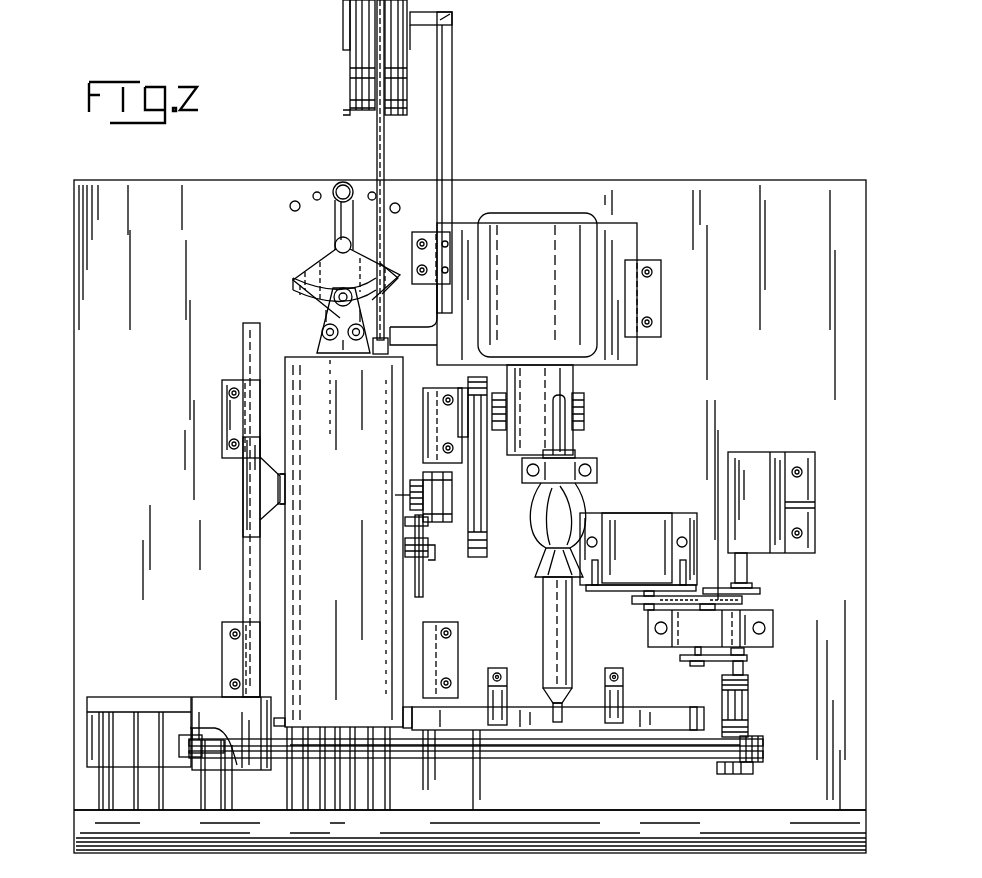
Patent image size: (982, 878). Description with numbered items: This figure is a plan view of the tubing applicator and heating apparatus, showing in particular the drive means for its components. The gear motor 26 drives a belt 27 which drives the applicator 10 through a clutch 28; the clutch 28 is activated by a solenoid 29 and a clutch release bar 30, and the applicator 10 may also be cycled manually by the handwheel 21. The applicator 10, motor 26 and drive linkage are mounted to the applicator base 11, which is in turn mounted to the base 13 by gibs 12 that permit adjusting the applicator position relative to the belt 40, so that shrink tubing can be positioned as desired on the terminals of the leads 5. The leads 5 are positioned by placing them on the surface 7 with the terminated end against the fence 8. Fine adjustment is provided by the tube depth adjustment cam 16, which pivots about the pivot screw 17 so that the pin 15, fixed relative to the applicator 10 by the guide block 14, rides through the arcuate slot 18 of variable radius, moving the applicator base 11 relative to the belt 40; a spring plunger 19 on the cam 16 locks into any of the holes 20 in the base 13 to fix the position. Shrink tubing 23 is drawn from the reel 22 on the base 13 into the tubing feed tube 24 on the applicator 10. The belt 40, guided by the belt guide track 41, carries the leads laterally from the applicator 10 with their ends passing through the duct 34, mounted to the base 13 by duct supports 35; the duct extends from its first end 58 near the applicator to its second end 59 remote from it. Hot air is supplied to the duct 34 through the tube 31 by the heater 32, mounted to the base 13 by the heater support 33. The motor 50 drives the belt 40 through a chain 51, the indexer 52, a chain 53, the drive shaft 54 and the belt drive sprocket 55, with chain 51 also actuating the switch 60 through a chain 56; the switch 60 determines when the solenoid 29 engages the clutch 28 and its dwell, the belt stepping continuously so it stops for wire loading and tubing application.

The leads 5 is at (202, 812).
The surface 7 is at (173, 715).
The fence 8 is at (100, 697).
The applicator 10 is at (270, 338).
The applicator base 11 is at (243, 357).
The gibs 12 is at (222, 420).
The base 13 is at (207, 188).
The guide block 14 is at (322, 330).
The pin 15 is at (325, 300).
The tube depth adjustment cam 16 is at (323, 262).
The pivot screw 17 is at (352, 243).
The arcuate slot 18 is at (308, 277).
The spring plunger 19 is at (343, 182).
The holes 20 is at (293, 200).
The handwheel 21 is at (245, 512).
The reel 22 is at (412, 46).
The shrink tubing 23 is at (385, 152).
The tubing feed tube 24 is at (389, 344).
The gear motor 26 is at (572, 215).
The belt 27 is at (488, 514).
The clutch 28 is at (427, 473).
The solenoid 29 is at (432, 558).
The clutch release bar 30 is at (408, 522).
The tube 31 is at (566, 711).
The heater 32 is at (578, 625).
The heater support 33 is at (598, 468).
The duct 34 is at (665, 707).
The duct supports 35 is at (496, 668).
The belt 40 is at (593, 760).
The belt guide track 41 is at (660, 762).
The motor 50 is at (643, 520).
The chain 51 is at (702, 596).
The indexer 52 is at (745, 628).
The chain 53 is at (747, 657).
The drive shaft 54 is at (749, 713).
The belt drive sprocket 55 is at (730, 777).
The chain 56 is at (756, 590).
The first end 58 is at (403, 718).
The second end 59 is at (702, 715).
The switch 60 is at (757, 455).